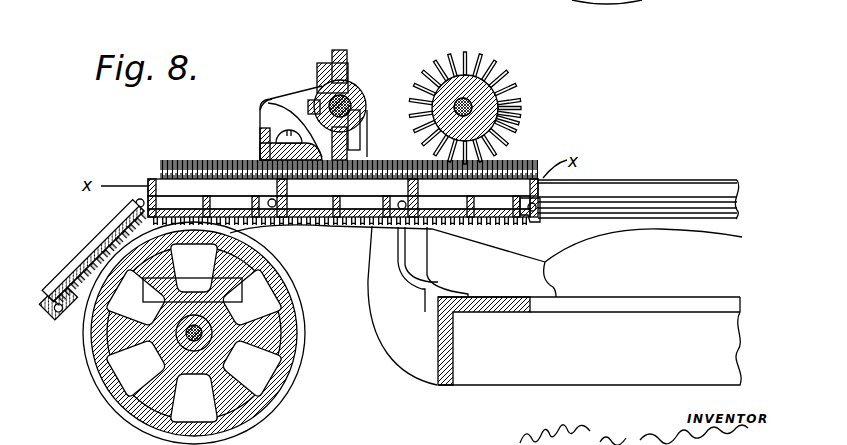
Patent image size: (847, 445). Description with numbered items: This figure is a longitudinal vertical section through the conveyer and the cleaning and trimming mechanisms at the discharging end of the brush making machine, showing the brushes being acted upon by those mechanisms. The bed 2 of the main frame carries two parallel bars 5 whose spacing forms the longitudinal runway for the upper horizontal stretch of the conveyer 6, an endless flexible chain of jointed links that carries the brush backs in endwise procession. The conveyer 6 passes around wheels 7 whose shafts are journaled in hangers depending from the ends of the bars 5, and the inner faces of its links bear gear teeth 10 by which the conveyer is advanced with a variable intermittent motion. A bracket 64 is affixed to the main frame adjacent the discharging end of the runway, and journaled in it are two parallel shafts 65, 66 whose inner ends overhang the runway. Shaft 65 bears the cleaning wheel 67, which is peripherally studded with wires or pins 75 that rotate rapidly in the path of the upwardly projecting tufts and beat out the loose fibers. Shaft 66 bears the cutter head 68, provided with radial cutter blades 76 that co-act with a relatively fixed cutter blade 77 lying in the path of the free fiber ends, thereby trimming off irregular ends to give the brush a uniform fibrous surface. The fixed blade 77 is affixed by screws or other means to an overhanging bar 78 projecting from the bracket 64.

The bed 2 is at (589, 341).
The bars 5 is at (729, 223).
The conveyer 6 is at (117, 217).
The wheels 7 is at (303, 322).
The gear teeth 10 is at (146, 178).
The bracket 64 is at (292, 98).
The shaft 65 is at (346, 95).
The shaft 66 is at (519, 95).
The cleaning wheel 67 is at (498, 66).
The cutter head 68 is at (322, 95).
The wires or pins 75 is at (520, 130).
The radial cutter blades 76 is at (344, 52).
The fixed cutter blade 77 is at (266, 106).
The overhanging bar 78 is at (262, 140).